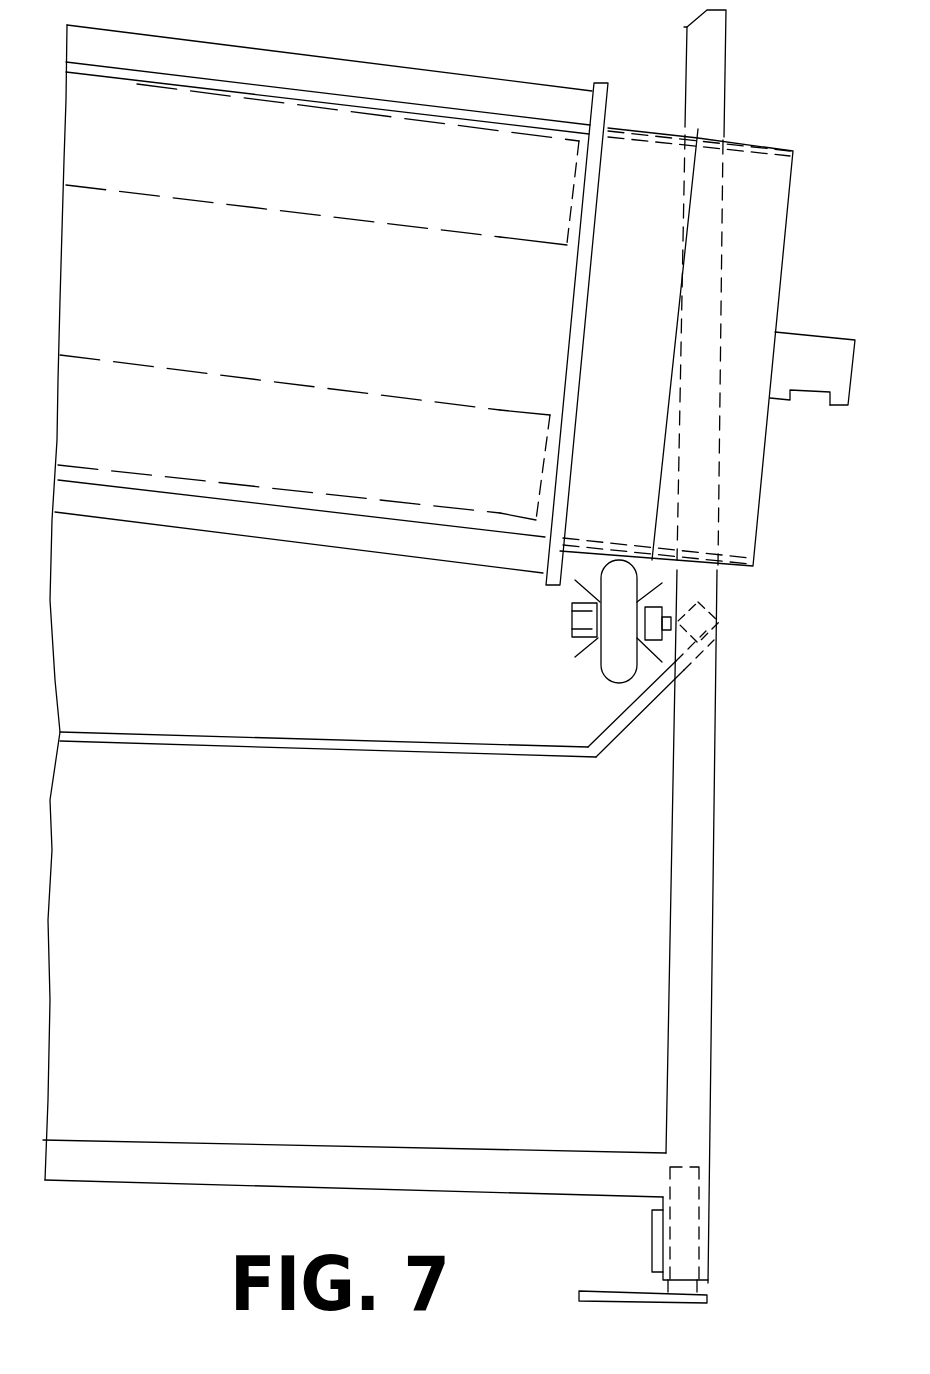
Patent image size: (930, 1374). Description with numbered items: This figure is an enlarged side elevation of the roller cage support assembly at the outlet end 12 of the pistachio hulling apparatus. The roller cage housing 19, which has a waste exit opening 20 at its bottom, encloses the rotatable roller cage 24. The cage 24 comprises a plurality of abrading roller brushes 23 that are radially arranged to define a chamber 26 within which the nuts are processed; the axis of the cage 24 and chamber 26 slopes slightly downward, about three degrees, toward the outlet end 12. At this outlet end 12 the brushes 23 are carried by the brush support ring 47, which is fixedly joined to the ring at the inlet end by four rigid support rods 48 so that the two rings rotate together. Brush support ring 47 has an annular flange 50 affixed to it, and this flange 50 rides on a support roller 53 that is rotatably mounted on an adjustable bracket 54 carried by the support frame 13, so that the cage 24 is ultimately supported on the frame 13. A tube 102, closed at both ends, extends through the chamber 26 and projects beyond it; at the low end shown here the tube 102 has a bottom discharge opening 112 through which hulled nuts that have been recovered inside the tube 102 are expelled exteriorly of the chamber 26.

The outlet end 12 is at (796, 385).
The support frame 13 is at (712, 956).
The roller cage housing 19 is at (620, 735).
The waste exit opening 20 is at (188, 748).
The roller brushes 23 is at (197, 84).
The roller cage 24 is at (378, 65).
The chamber 26 is at (225, 284).
The brush support ring 47 is at (597, 82).
The rigid support rods 48 is at (299, 54).
The annular flange 50 is at (643, 122).
The support roller 53 is at (602, 674).
The adjustable bracket 54 is at (572, 636).
The tube 102 is at (812, 333).
The bottom discharge opening 112 is at (812, 401).